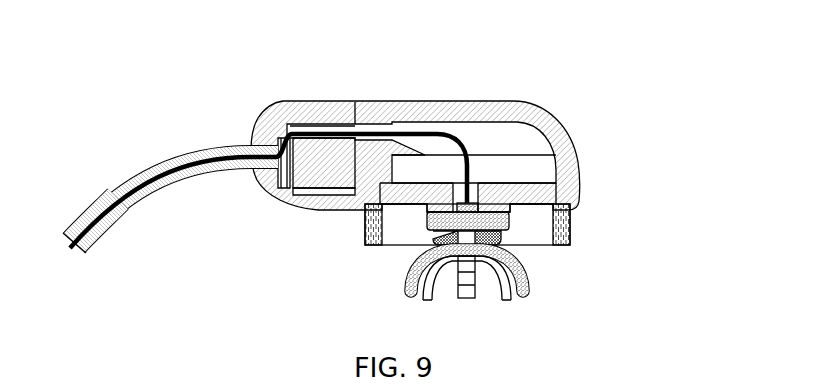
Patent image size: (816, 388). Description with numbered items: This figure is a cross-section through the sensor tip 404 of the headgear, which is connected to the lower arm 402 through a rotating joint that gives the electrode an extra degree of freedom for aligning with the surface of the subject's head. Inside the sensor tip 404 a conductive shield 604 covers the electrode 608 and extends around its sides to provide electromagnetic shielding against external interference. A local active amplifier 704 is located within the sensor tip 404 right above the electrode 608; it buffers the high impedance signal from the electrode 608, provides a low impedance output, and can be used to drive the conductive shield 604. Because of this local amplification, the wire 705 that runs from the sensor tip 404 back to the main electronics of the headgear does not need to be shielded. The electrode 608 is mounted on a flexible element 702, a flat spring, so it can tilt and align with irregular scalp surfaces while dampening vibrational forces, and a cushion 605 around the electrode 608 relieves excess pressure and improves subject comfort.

The lower arm 402 is at (178, 155).
The sensor tip 404 is at (397, 169).
The conductive shield 604 is at (540, 107).
The cushion 605 is at (367, 240).
The electrode 608 is at (530, 288).
The flexible element 702 is at (545, 190).
The local active amplifier 704 is at (472, 204).
The wire 705 is at (405, 131).